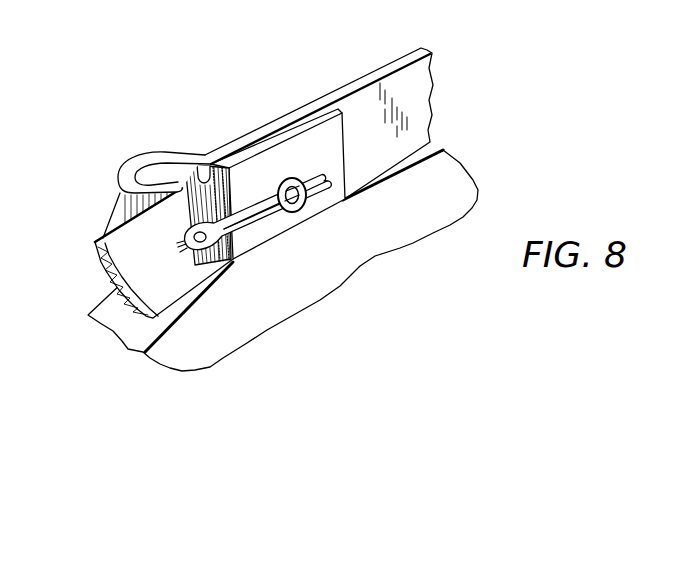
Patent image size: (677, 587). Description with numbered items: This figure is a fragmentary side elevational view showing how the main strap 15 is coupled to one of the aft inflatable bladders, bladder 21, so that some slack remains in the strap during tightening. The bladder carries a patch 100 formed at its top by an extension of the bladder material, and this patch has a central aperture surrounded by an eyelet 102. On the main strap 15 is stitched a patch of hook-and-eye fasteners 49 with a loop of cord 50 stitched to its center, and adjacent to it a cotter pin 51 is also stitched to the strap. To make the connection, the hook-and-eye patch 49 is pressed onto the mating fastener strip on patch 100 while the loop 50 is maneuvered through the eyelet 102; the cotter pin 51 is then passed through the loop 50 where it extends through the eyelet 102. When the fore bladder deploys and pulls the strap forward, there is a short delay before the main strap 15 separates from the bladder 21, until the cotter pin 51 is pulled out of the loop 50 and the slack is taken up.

The main strap 15 is at (343, 85).
The bladder 21 is at (407, 217).
The patch of hook-and-eye fasteners 49 is at (201, 169).
The loop of cord 50 is at (304, 194).
The cotter pin 51 is at (256, 221).
The patch 100 is at (334, 141).
The eyelet 102 is at (299, 208).